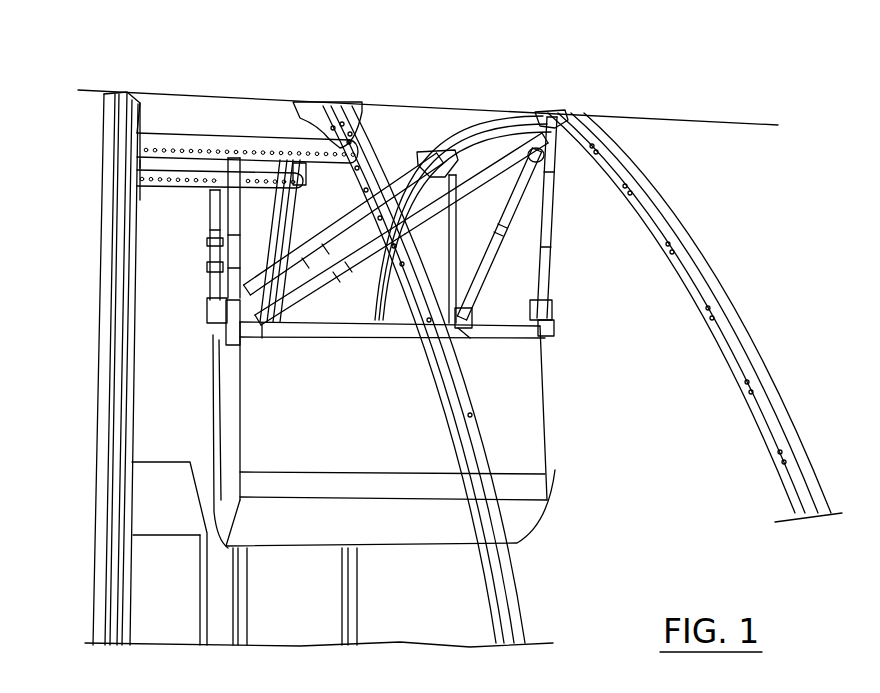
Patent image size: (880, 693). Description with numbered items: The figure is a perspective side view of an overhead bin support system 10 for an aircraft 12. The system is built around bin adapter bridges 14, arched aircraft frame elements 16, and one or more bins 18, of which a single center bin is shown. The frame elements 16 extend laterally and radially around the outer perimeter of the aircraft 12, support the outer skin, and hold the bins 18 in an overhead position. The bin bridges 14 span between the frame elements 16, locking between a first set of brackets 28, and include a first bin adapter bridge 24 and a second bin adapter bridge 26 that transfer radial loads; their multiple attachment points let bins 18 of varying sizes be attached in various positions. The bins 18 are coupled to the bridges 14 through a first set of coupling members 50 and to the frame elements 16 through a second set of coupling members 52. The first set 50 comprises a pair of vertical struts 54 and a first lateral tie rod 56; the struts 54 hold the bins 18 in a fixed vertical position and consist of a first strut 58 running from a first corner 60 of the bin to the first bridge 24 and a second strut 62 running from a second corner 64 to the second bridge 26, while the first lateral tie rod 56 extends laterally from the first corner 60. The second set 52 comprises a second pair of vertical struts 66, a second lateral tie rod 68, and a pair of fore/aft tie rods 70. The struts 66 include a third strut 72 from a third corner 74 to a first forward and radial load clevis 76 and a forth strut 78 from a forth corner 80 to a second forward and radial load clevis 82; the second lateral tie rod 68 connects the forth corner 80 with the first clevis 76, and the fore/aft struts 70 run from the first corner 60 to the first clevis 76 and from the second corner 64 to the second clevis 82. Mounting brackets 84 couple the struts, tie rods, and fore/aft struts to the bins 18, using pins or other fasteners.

The overhead bin support system 10 is at (733, 209).
The aircraft 12 is at (688, 120).
The bin adapter bridges 14 is at (160, 132).
The aircraft frame elements 16 is at (140, 402).
The bins 18 is at (548, 383).
The first bin adapter bridge 24 is at (209, 133).
The second bin adapter bridge 26 is at (137, 197).
The first set of brackets 28 is at (288, 102).
The first set of coupling members 50 is at (207, 266).
The second set of coupling members 52 is at (343, 252).
The pair of vertical struts 54 is at (210, 205).
The first lateral tie rod 56 is at (272, 240).
The first strut 58 is at (292, 210).
The first corner 60 is at (213, 357).
The second strut 62 is at (207, 240).
The second corner 64 is at (210, 337).
The second pair of vertical struts 66 is at (492, 266).
The second lateral tie rod 68 is at (480, 266).
The fore/aft tie rods 70 is at (360, 214).
The third strut 72 is at (552, 305).
The third corner 74 is at (554, 333).
The first forward and radial load clevis 76 is at (550, 110).
The forth strut 78 is at (462, 200).
The forth corner 80 is at (472, 324).
The second forward and radial load clevis 82 is at (430, 150).
The mounting brackets 84 is at (207, 310).